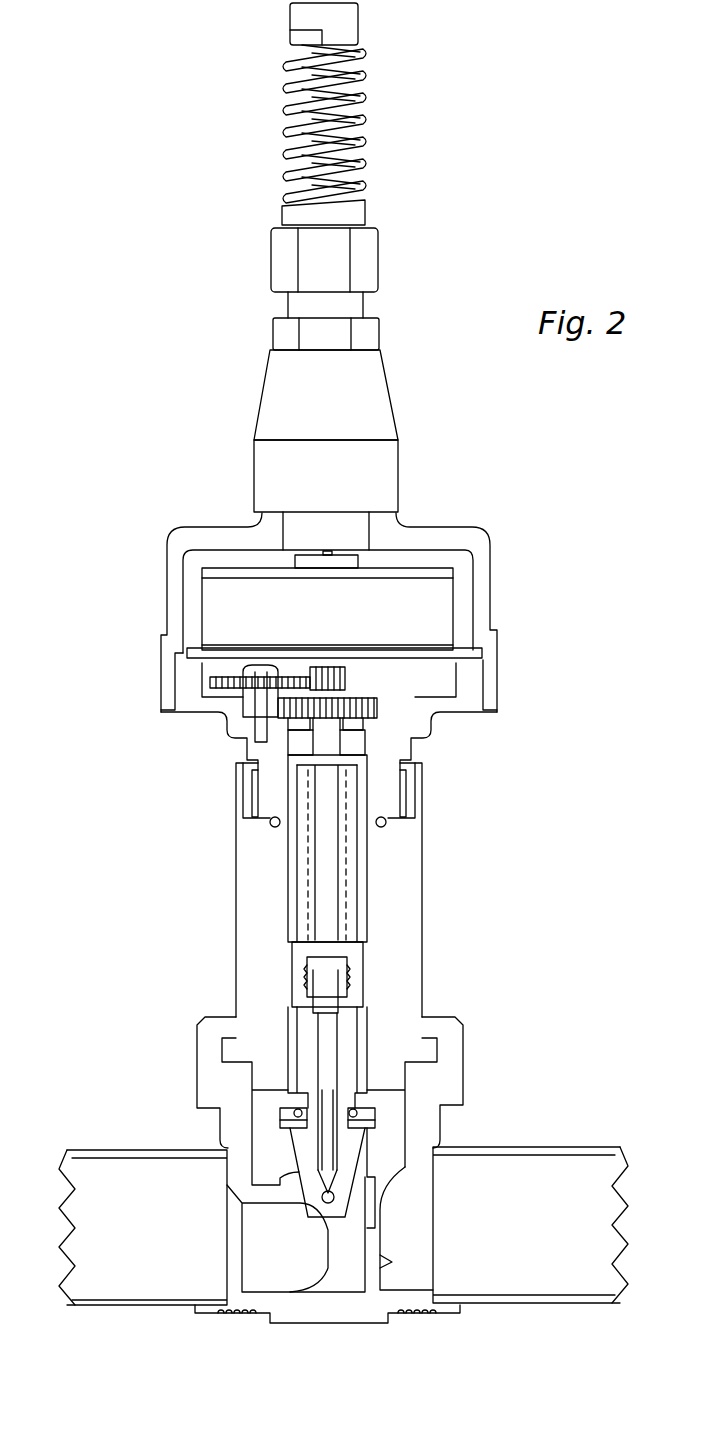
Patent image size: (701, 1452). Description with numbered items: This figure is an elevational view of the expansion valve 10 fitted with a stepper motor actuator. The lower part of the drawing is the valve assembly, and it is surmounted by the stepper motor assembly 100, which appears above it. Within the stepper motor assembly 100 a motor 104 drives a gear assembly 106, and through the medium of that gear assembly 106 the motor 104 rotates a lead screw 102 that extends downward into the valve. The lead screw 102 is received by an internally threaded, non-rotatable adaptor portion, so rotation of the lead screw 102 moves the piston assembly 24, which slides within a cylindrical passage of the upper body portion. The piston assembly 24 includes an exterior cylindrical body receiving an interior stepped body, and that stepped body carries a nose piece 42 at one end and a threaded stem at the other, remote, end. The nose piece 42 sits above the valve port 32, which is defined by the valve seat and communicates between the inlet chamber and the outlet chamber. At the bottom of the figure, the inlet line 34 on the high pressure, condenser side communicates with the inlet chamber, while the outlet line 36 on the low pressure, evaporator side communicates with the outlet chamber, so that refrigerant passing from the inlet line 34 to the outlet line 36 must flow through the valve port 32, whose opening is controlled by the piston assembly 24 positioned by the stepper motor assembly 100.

The expansion valve 10 is at (445, 928).
The piston assembly 24 is at (368, 1020).
The valve port 32 is at (300, 1203).
The inlet line 34 is at (158, 1234).
The outlet line 36 is at (512, 1236).
The nose piece 42 is at (365, 1162).
The stepper motor assembly 100 is at (480, 523).
The lead screw 102 is at (350, 852).
The motor 104 is at (455, 602).
The gear assembly 106 is at (368, 690).